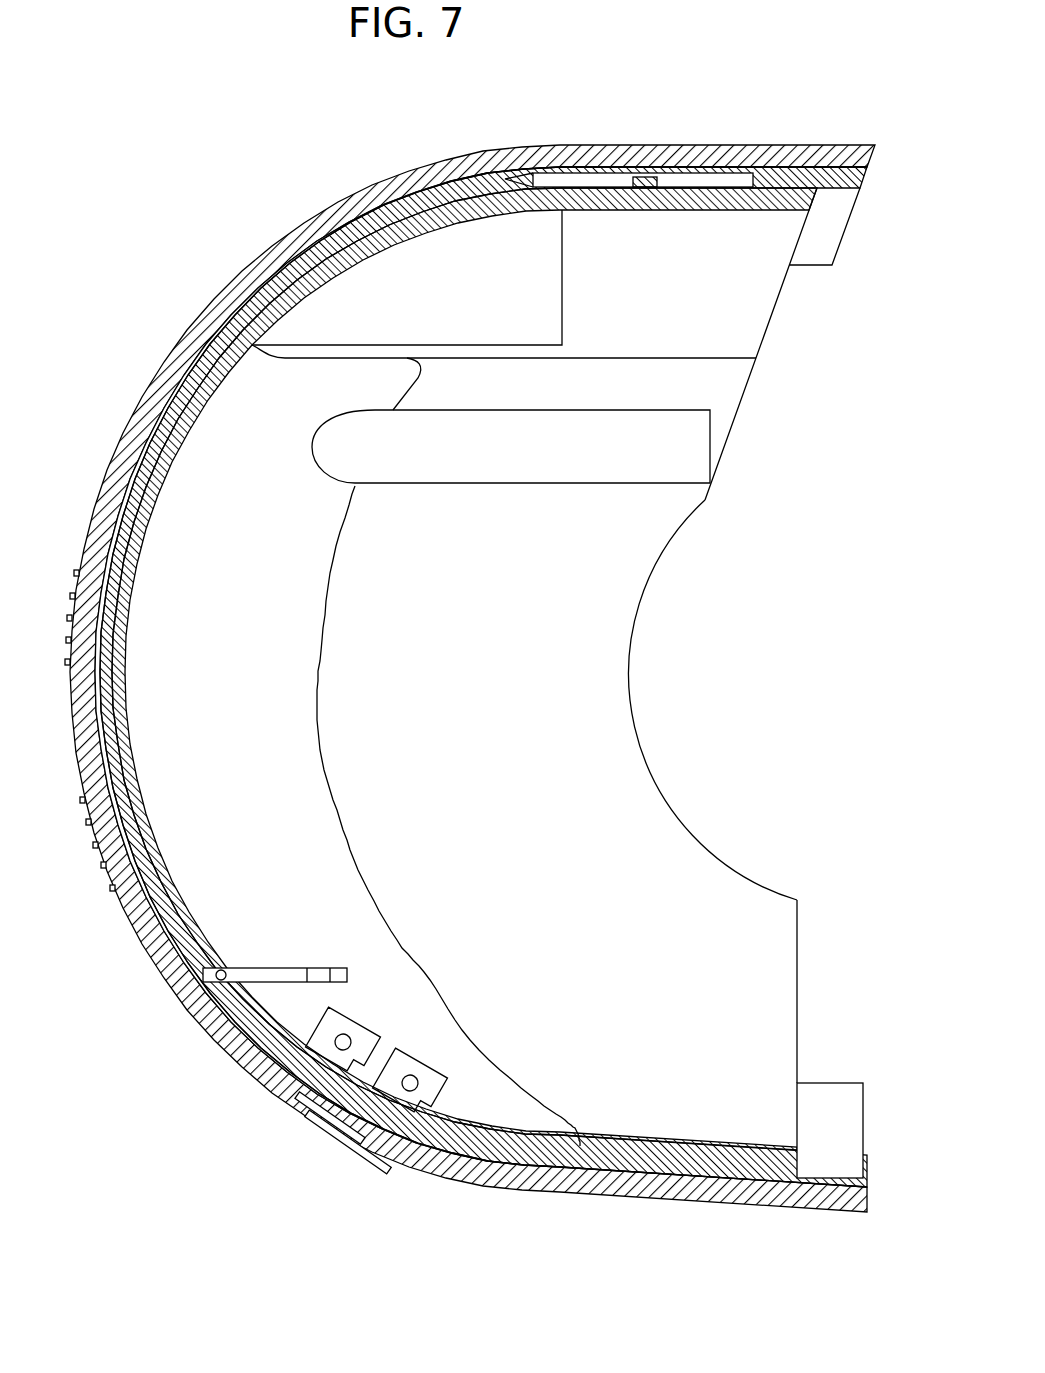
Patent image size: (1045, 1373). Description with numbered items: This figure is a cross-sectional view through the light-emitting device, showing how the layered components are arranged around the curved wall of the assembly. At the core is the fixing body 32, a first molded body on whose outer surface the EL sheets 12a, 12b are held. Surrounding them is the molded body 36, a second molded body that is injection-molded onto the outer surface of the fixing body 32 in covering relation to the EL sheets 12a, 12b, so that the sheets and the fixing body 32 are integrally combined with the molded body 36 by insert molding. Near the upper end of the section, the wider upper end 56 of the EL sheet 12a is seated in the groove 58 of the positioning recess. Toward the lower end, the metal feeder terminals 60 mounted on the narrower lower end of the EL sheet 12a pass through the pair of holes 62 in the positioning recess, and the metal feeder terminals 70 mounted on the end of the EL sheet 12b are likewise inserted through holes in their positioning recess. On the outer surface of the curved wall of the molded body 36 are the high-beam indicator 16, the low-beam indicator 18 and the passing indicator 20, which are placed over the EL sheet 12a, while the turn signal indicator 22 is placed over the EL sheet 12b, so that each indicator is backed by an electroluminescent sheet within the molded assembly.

The molded body 36 is at (366, 195).
The passing indicator 20 is at (232, 303).
The EL sheet 12a is at (292, 270).
The groove 58 is at (648, 148).
The wider upper end 56 is at (768, 148).
The fixing body 32 is at (642, 615).
The high-beam indicator 16 is at (67, 614).
The low-beam indicator 18 is at (101, 865).
The feeder terminals 60 is at (262, 975).
The holes 62 is at (222, 968).
The feeder terminals 70 is at (420, 1066).
The turn signal indicator 22 is at (318, 1124).
The EL sheet 12b is at (363, 1150).